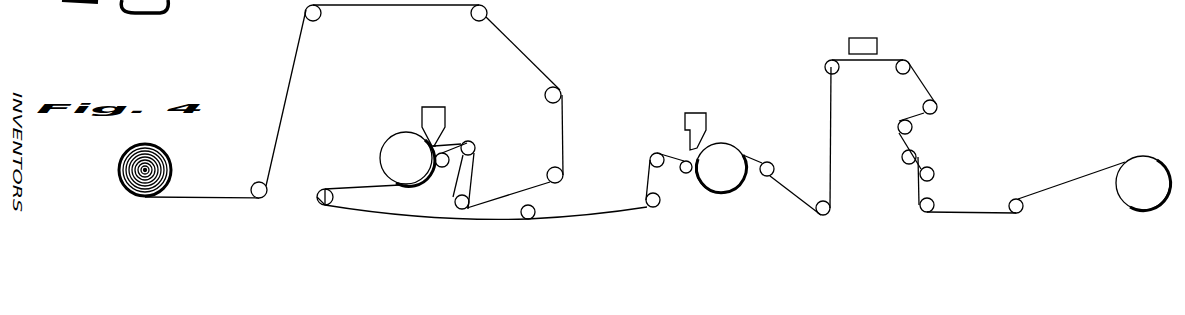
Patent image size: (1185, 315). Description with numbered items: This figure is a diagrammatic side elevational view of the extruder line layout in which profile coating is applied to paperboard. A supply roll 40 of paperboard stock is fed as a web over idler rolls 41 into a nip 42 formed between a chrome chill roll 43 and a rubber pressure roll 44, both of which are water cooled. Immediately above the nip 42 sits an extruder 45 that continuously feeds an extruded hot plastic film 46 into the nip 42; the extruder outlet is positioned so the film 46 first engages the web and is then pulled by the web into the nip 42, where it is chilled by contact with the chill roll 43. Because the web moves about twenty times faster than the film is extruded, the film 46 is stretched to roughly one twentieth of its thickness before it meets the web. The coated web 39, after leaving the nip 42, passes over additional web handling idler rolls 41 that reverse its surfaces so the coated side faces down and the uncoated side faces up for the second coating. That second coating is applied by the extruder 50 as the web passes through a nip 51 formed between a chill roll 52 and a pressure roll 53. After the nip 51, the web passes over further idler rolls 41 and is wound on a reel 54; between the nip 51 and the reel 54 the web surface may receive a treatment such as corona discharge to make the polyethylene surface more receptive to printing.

The coated web 39 is at (345, 186).
The supply roll 40 is at (166, 156).
The idler rolls 41 is at (262, 182).
The nip 42 is at (441, 170).
The chrome chill roll 43 is at (388, 148).
The rubber pressure roll 44 is at (449, 160).
The extruder 45 is at (433, 117).
The extruded hot plastic film 46 is at (436, 146).
The extruder 50 is at (696, 124).
The nip 51 is at (700, 172).
The chill roll 52 is at (731, 149).
The pressure roll 53 is at (683, 173).
The reel 54 is at (1140, 170).